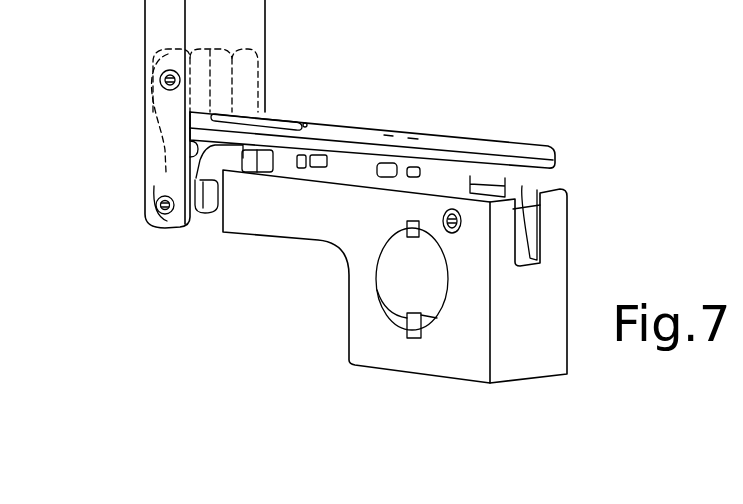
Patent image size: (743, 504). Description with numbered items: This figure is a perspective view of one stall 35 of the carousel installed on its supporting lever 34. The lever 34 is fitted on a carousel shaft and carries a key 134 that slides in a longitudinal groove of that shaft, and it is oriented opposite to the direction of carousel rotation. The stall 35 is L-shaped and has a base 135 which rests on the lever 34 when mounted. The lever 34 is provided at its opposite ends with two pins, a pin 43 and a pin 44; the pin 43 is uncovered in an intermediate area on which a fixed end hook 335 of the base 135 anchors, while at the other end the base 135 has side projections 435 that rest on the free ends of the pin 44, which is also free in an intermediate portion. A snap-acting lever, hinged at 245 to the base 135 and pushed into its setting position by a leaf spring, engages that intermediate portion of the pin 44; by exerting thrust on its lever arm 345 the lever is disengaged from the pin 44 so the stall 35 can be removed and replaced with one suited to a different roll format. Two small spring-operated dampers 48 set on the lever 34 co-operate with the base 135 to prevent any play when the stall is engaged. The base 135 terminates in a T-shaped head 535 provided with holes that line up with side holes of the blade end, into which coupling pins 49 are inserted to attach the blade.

The lever 34 is at (578, 257).
The stall 35 is at (303, 71).
The pin 43 is at (452, 207).
The pin 44 is at (206, 214).
The spring-operated dampers 48 is at (292, 172).
The coupling pins 49 is at (164, 72).
The key 134 is at (407, 233).
The base 135 is at (360, 133).
The hinge 245 is at (190, 147).
The fixed end hook 335 is at (560, 208).
The lever arm 345 is at (278, 116).
The side projections 435 is at (187, 178).
The T-shaped head 535 is at (157, 106).